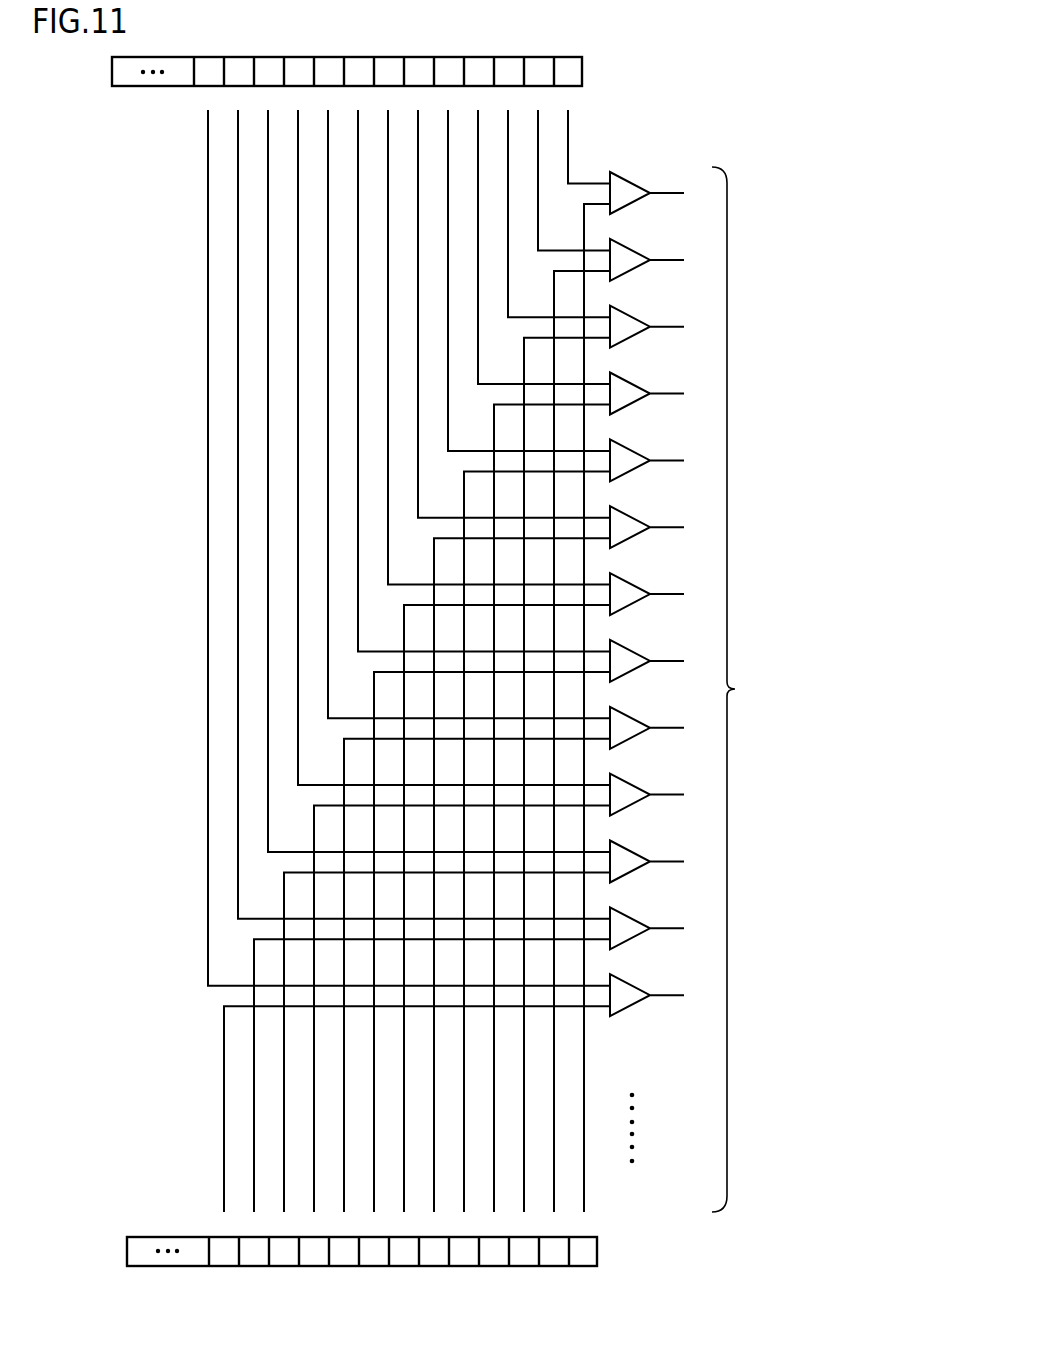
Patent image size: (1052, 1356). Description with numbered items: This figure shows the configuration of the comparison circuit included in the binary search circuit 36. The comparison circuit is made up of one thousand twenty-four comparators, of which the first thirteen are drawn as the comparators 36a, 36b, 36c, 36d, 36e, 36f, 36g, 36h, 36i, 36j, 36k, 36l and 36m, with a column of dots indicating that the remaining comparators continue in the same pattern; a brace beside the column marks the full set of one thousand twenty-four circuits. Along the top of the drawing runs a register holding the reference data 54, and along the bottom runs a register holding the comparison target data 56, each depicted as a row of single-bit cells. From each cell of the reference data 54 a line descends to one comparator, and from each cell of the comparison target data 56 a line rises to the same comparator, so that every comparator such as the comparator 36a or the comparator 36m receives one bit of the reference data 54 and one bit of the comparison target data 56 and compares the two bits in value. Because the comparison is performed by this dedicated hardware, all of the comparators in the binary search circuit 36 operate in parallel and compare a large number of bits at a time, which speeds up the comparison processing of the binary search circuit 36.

The reference data 54 is at (112, 70).
The comparison target data 56 is at (127, 1250).
The binary search circuit 36 is at (697, 148).
The comparator 36a is at (633, 184).
The comparator 36b is at (633, 251).
The comparator 36c is at (633, 318).
The comparator 36d is at (633, 384).
The comparator 36e is at (633, 451).
The comparator 36f is at (633, 518).
The comparator 36g is at (633, 585).
The comparator 36h is at (633, 652).
The comparator 36i is at (633, 719).
The comparator 36j is at (633, 786).
The comparator 36k is at (633, 852).
The comparator 36l is at (633, 919).
The comparator 36m is at (633, 986).